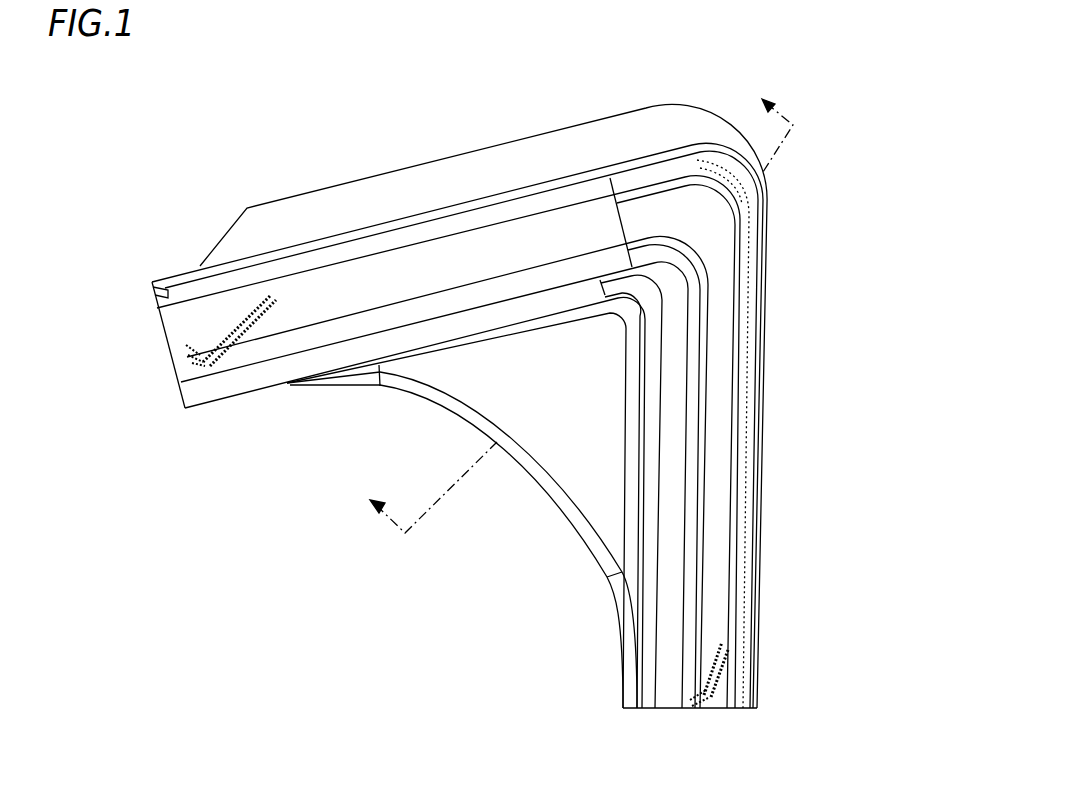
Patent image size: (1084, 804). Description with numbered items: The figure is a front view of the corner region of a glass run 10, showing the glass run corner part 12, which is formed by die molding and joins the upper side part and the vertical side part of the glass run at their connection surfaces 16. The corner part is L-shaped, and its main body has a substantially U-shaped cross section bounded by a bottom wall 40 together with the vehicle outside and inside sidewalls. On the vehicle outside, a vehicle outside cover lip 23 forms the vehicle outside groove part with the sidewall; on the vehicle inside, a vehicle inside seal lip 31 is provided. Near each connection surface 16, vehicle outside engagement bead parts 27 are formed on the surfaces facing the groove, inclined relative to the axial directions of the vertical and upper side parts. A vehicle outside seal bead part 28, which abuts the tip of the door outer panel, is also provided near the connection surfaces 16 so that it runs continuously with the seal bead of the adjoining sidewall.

The glass run 10 is at (312, 492).
The glass run corner part 12 is at (677, 172).
The connection surface 16 is at (180, 390).
The vehicle outside cover lip 23 is at (214, 306).
The vehicle outside engagement bead part 27 is at (222, 333).
The vehicle outside seal bead part 28 is at (190, 350).
The vehicle inside seal lip 31 is at (237, 383).
The bottom wall 40 is at (305, 255).